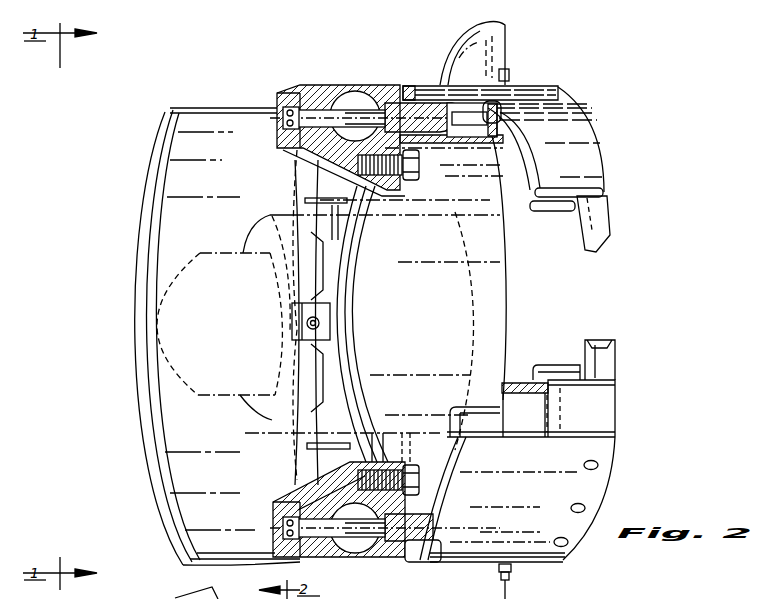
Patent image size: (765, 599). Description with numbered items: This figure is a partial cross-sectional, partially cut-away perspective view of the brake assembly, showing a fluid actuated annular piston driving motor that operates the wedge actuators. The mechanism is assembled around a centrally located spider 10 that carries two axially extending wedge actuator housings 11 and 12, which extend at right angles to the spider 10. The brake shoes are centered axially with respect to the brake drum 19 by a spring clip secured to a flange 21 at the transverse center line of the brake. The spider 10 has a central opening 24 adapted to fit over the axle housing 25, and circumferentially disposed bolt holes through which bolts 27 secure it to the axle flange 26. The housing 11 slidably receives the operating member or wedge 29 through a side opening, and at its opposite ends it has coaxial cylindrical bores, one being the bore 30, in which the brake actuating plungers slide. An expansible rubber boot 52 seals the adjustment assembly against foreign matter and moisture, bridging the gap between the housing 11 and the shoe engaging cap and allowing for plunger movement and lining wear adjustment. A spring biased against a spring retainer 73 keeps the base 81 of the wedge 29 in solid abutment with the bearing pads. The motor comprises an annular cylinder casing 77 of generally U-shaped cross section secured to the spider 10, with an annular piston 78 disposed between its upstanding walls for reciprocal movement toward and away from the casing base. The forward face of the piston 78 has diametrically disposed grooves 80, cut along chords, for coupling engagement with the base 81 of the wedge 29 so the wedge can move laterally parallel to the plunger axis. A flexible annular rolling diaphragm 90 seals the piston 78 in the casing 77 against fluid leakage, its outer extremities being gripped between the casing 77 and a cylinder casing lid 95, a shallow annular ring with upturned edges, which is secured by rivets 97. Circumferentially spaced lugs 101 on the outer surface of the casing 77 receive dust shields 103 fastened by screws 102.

The spider 10 is at (328, 361).
The wedge actuator housing 11 is at (337, 85).
The wedge actuator housing 12 is at (383, 563).
The brake drum 19 is at (204, 117).
The flange 21 is at (323, 323).
The central opening 24 is at (345, 293).
The axle housing 25 is at (268, 222).
The axle flange 26 is at (415, 205).
The bolts 27 is at (418, 168).
The wedge 29 is at (381, 95).
The cylindrical bore 30 is at (362, 91).
The boot 52 is at (184, 590).
The spring retainer 73 is at (277, 135).
The annular cylinder casing 77 is at (407, 88).
The annular piston 78 is at (490, 100).
The grooves 80 is at (500, 118).
The base of the wedge 81 is at (500, 115).
The flexible annular rolling diaphragm 90 is at (575, 182).
The cylinder casing lid 95 is at (608, 211).
The rivets 97 is at (598, 465).
The lugs 101 is at (512, 563).
The screws 102 is at (509, 581).
The dust shields 103 is at (506, 28).